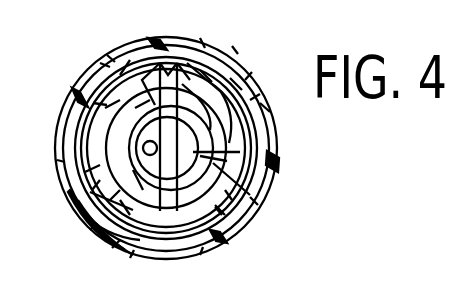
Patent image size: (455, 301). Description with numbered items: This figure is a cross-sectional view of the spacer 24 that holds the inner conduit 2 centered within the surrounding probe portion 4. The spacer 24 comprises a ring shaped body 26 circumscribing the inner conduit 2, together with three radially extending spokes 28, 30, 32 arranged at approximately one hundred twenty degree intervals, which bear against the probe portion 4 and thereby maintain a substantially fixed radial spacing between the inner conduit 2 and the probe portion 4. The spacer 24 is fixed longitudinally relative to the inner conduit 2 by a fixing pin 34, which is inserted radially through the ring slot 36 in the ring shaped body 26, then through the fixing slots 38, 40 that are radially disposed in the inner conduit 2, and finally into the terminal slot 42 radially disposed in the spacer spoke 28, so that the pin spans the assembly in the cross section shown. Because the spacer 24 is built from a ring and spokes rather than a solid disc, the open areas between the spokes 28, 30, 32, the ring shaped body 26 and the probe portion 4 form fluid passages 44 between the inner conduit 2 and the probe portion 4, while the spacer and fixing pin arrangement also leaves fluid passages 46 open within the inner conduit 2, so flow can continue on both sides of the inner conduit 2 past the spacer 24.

The inner conduit 2 is at (62, 127).
The probe portion 4 is at (258, 225).
The spacer 24 is at (234, 142).
The ring shaped body 26 is at (193, 262).
The spoke 28 is at (140, 42).
The spoke 30 is at (78, 213).
The spoke 32 is at (267, 193).
The fixing pin 34 is at (103, 237).
The ring slot 36 is at (137, 255).
The fixing slot 38 is at (176, 258).
The fixing slot 40 is at (212, 62).
The terminal slot 42 is at (177, 63).
The fluid passages 44 is at (80, 80).
The fluid passages 46 is at (276, 160).